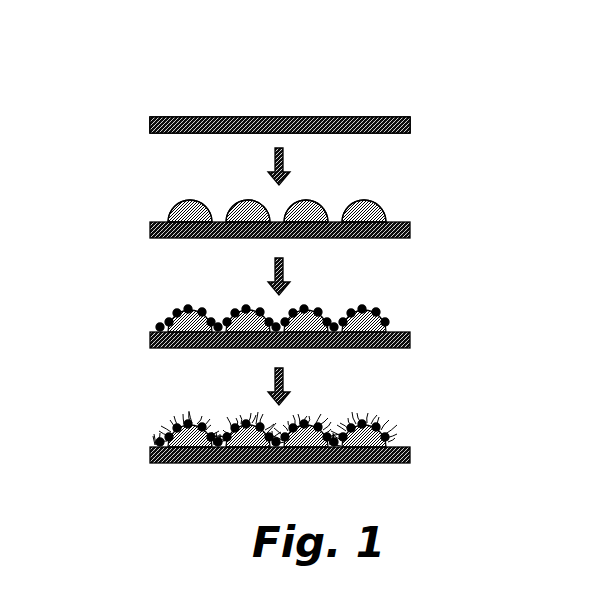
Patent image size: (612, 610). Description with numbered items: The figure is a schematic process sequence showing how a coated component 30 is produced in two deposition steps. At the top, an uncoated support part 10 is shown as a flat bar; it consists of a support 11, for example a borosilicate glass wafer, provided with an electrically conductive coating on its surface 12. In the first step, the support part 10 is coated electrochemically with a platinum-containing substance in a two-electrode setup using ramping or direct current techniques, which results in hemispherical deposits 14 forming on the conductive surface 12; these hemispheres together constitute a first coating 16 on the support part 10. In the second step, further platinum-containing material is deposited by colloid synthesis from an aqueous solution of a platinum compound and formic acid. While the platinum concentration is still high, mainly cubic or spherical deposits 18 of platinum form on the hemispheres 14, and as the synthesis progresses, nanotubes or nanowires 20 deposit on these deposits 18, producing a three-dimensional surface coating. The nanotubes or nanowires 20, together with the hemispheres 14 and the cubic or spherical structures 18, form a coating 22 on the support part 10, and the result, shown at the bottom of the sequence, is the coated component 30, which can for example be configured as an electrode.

The support part 10 is at (428, 110).
The conductive surface 12 is at (171, 116).
The support 11 is at (150, 133).
The hemispherical deposits 14 is at (378, 204).
The first coating 16 is at (420, 197).
The cubic or spherical deposits 18 is at (382, 312).
The nanotubes or nanowires 20 is at (380, 428).
The coating 22 is at (420, 414).
The coated component 30 is at (257, 403).